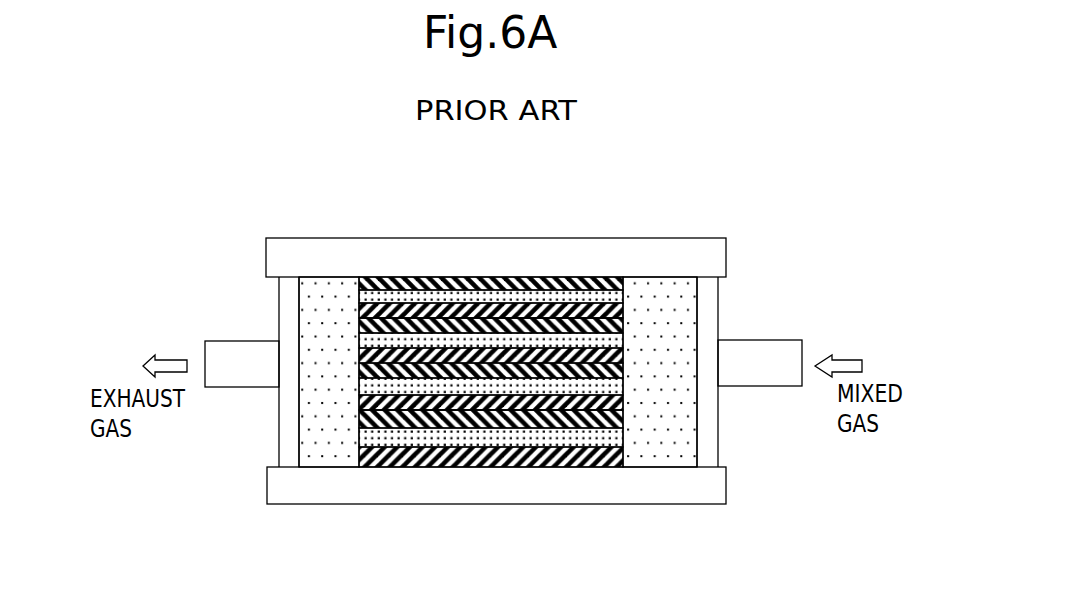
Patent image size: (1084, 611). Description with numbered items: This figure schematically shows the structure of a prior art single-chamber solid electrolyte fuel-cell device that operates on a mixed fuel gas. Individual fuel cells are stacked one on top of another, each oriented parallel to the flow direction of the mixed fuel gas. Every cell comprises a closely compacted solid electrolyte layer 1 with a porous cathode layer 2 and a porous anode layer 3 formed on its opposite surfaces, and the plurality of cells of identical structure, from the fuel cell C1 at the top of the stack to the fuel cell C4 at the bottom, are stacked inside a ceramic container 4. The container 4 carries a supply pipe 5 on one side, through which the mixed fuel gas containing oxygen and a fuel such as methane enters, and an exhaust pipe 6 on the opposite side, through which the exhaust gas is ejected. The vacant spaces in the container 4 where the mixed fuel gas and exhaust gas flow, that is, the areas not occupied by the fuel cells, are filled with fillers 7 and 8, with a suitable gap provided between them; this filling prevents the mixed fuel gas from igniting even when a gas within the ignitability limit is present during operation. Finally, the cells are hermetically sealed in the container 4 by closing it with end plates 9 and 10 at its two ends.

The solid electrolyte layer 1 is at (417, 297).
The cathode layer 2 is at (383, 284).
The anode layer 3 is at (450, 310).
The ceramic container 4 is at (645, 238).
The supply pipe 5 is at (775, 340).
The exhaust pipe 6 is at (235, 341).
The filler 7 is at (673, 462).
The filler 8 is at (333, 462).
The end plate 9 is at (718, 428).
The end plate 10 is at (279, 437).
The fuel cell C1 is at (463, 203).
The fuel cell C4 is at (633, 547).